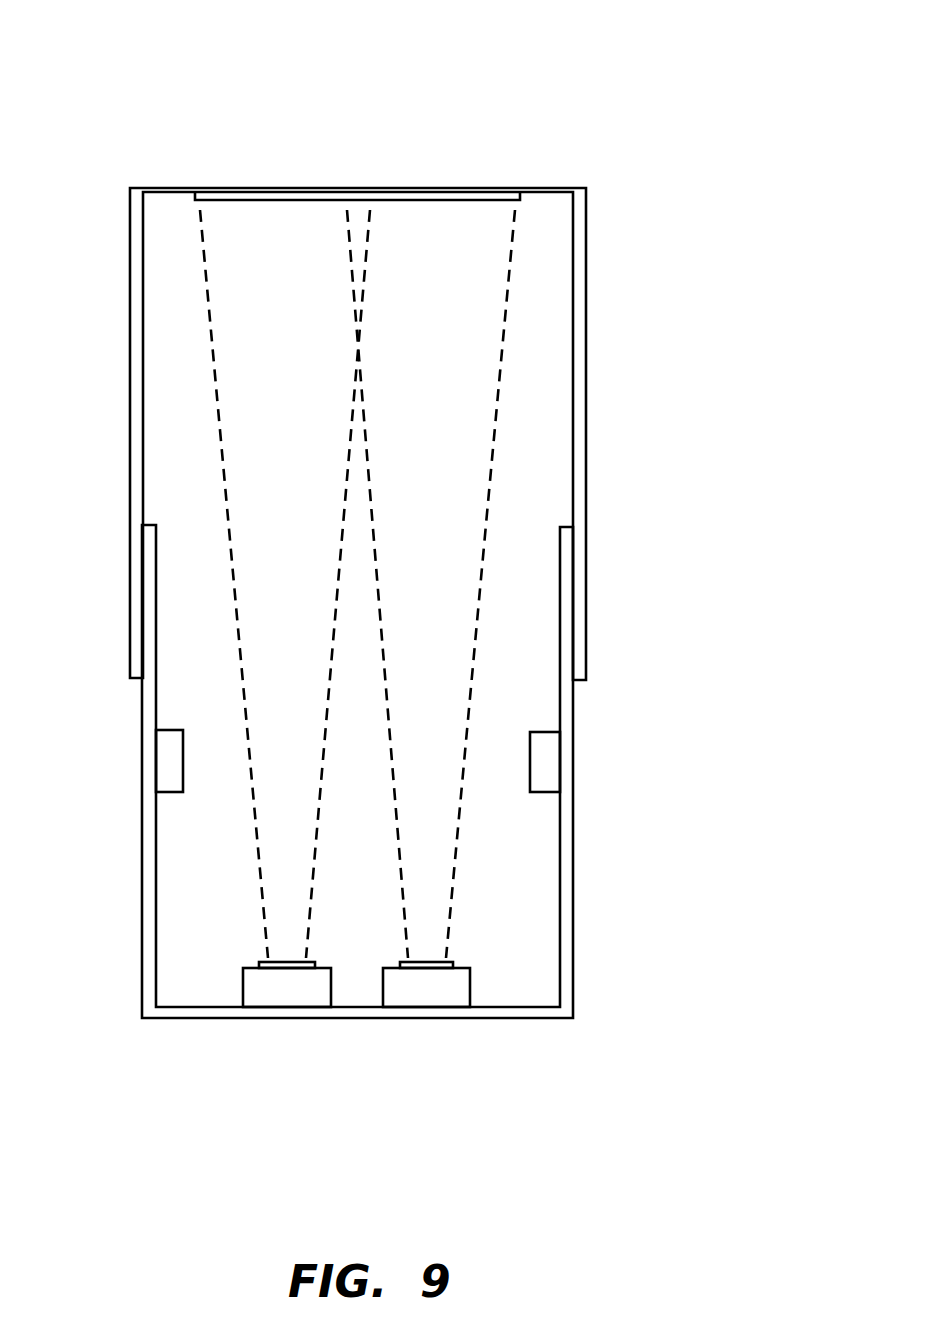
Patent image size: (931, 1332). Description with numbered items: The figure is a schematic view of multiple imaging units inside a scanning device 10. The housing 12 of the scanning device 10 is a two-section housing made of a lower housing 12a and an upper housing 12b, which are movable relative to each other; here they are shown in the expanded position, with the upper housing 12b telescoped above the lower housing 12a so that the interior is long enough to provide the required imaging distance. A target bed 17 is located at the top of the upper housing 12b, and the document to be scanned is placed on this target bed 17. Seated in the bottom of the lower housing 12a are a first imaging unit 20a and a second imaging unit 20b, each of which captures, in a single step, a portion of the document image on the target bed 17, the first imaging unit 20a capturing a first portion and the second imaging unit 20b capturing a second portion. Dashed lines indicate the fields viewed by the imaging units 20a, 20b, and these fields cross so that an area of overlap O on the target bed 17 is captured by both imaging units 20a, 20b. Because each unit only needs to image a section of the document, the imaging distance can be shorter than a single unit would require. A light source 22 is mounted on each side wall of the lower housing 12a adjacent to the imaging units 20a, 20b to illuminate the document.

The scanning device 10 is at (220, 95).
The housing 12 is at (652, 524).
The lower housing 12a is at (574, 885).
The upper housing 12b is at (587, 243).
The target bed 17 is at (430, 188).
The area of overlap O is at (358, 227).
The light source 22 is at (165, 762).
The first imaging unit 20a is at (287, 982).
The second imaging unit 20b is at (414, 982).